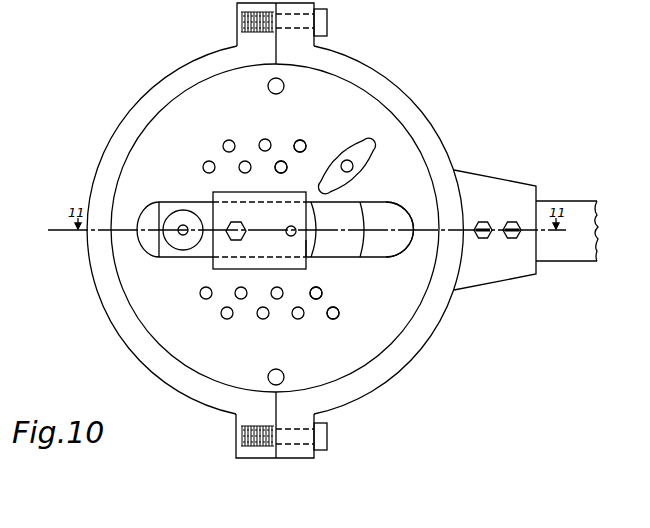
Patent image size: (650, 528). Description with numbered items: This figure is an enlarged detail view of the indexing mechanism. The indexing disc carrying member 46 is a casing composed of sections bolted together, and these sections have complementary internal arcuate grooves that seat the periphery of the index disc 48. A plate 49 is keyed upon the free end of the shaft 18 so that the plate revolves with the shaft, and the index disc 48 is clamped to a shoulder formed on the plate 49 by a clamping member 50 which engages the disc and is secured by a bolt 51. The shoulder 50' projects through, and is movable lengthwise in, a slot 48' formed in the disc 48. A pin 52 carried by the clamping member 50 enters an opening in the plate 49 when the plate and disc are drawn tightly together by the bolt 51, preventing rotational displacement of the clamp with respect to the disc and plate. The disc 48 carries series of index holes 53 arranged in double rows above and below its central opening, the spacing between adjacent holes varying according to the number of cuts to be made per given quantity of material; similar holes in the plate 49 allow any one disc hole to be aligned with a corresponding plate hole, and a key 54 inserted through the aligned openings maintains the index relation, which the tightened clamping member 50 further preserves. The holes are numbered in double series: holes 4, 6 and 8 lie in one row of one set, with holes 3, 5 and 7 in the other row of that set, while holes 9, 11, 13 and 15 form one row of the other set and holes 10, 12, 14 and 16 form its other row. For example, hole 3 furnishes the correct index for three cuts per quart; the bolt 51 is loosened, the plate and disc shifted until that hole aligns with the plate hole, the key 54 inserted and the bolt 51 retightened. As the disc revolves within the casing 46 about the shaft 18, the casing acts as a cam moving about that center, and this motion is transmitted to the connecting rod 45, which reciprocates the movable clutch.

The index hole "3" 3 is at (300, 140).
The index hole "4" 4 is at (281, 161).
The index hole "5" 5 is at (265, 139).
The index hole "6" 6 is at (245, 162).
The index hole "7" 7 is at (229, 141).
The index hole "8" 8 is at (208, 162).
The index hole "9" 9 is at (206, 287).
The index hole "10" 10 is at (227, 319).
The index hole "11" 11 is at (241, 287).
The index hole "12" 12 is at (263, 319).
The index hole "13" 13 is at (277, 287).
The index hole "14" 14 is at (298, 319).
The index hole "15" 15 is at (316, 287).
The index hole "16" 16 is at (333, 319).
The shaft 18 is at (182, 248).
The connecting rod 45 is at (580, 230).
The indexing disc carrying member 46 is at (275, 230).
The index disc 48 is at (275, 228).
The slot 48' is at (404, 240).
The plate 49 is at (202, 208).
The clamping member 50 is at (259, 230).
The shoulder 50' is at (324, 258).
The bolt 51 is at (241, 235).
The pin 52 is at (291, 236).
The index holes 53 is at (288, 167).
The key 54 is at (350, 157).